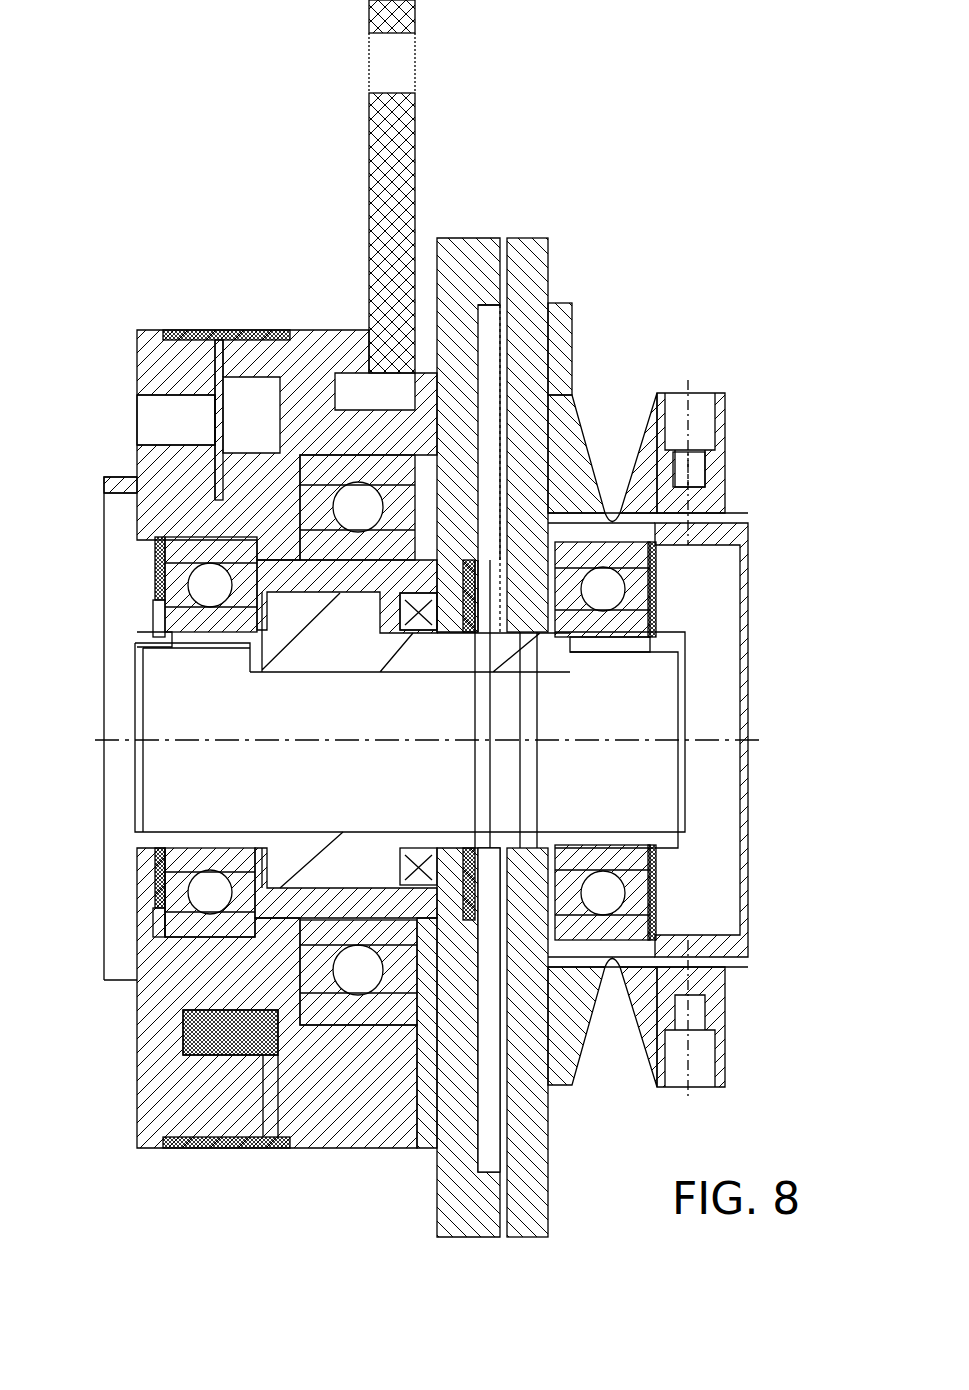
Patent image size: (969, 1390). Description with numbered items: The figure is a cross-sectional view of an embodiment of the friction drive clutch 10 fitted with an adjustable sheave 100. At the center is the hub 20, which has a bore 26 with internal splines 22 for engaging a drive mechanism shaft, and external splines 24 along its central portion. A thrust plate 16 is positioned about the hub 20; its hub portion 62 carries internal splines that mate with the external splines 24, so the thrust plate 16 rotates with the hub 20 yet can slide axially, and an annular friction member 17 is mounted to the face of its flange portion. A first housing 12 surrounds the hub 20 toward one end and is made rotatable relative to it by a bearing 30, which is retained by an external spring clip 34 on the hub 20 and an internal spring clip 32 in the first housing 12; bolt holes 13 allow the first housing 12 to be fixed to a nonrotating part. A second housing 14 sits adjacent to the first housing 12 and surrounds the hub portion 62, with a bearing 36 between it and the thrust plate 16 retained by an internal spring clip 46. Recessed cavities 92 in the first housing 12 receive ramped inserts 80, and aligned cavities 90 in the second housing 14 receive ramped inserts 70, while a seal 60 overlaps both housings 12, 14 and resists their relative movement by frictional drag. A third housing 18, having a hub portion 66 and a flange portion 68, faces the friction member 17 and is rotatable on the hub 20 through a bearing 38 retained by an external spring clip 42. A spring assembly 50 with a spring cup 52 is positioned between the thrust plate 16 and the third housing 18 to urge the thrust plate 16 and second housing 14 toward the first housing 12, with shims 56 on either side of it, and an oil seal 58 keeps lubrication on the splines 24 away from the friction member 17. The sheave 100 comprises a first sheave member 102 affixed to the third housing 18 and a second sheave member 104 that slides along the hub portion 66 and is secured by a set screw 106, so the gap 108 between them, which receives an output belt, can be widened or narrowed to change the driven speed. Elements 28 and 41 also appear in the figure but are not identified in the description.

The friction drive clutch 10 is at (515, 70).
The first housing 12 is at (150, 365).
The bolt holes 13 is at (155, 418).
The second housing 14 is at (385, 130).
The thrust plate 16 is at (462, 265).
The annular friction member 17 is at (482, 265).
The third housing 18 is at (525, 265).
The hub 20 is at (140, 840).
The internal splines 22 is at (290, 663).
The external splines 24 is at (293, 600).
The bore 26 is at (322, 723).
The retainer 28 is at (145, 640).
The bearing 30 is at (165, 555).
The internal spring clip 32 is at (155, 537).
The external spring clip 34 is at (153, 605).
The bearing 36 is at (313, 560).
The bearing 38 is at (625, 565).
The seal 41 is at (655, 625).
The external spring clip 42 is at (575, 640).
The internal spring clip 46 is at (420, 540).
The spring assembly 50 is at (495, 905).
The spring cup 52 is at (570, 1062).
The shim 56 is at (462, 850).
The oil seal 58 is at (390, 1025).
The seal 60 is at (200, 322).
The hub portion 62 is at (245, 335).
The hub portion 66 is at (742, 523).
The flange portion 68 is at (548, 300).
The ramped insert 70 is at (240, 1150).
The ramped insert 80 is at (210, 1150).
The recessed cavities 90 is at (285, 1060).
The recessed cavities 92 is at (185, 1040).
The adjustable sheave 100 is at (637, 388).
The first sheave member 102 is at (562, 420).
The second sheave member 104 is at (672, 400).
The set screw 106 is at (690, 465).
The gap 108 is at (610, 425).